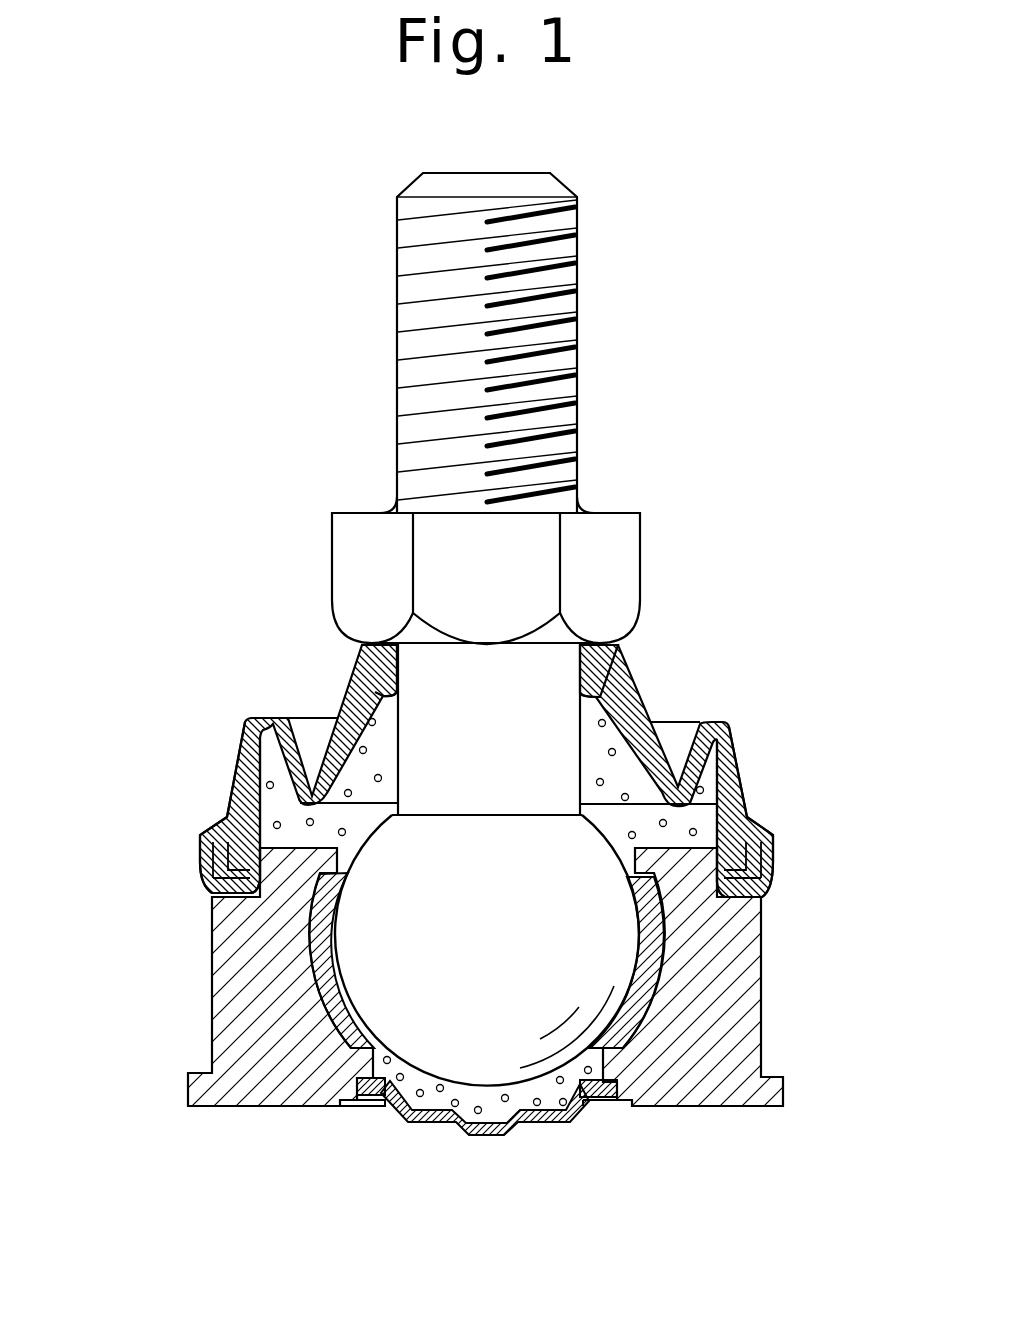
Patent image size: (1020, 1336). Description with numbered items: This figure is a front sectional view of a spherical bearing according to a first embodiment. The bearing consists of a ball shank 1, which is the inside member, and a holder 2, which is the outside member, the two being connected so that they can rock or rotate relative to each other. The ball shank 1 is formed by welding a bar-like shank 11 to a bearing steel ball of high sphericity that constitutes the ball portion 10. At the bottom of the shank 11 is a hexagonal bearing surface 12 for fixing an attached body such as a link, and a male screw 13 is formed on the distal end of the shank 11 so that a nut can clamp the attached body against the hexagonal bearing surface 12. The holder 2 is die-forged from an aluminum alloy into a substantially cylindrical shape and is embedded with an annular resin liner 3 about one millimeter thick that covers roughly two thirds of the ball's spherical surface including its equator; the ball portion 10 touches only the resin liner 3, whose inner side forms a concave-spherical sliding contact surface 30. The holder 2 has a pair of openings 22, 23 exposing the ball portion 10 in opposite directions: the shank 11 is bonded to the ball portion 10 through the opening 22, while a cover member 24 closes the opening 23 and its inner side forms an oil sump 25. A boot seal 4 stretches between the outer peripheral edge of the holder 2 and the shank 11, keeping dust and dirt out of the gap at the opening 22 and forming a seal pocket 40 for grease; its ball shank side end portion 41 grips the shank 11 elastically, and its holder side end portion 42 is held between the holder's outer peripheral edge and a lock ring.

The ball shank 1 is at (590, 210).
The male screw 13 is at (565, 287).
The hexagonal bearing surface 12 is at (622, 552).
The shank 11 is at (555, 712).
The ball portion 10 is at (467, 1043).
The holder 2 is at (178, 1045).
The resin liner 3 is at (662, 960).
The sliding contact surface 30 is at (353, 948).
The opening 22 is at (355, 840).
The opening 23 is at (587, 1092).
The cover member 24 is at (490, 1128).
The oil sump 25 is at (372, 1105).
The boot seal 4 is at (741, 700).
The seal pocket 40 is at (697, 805).
The ball shank side end portion 41 is at (360, 652).
The holder side end portion 42 is at (198, 858).